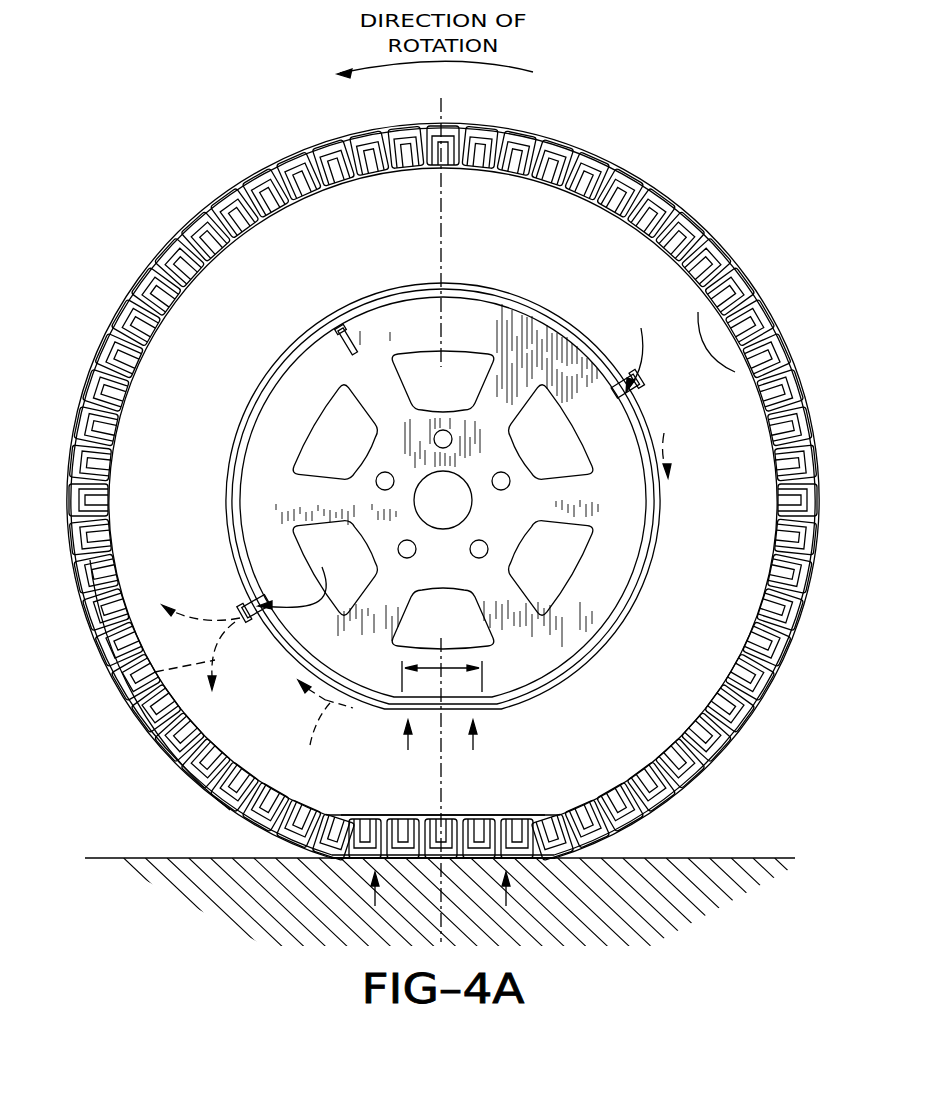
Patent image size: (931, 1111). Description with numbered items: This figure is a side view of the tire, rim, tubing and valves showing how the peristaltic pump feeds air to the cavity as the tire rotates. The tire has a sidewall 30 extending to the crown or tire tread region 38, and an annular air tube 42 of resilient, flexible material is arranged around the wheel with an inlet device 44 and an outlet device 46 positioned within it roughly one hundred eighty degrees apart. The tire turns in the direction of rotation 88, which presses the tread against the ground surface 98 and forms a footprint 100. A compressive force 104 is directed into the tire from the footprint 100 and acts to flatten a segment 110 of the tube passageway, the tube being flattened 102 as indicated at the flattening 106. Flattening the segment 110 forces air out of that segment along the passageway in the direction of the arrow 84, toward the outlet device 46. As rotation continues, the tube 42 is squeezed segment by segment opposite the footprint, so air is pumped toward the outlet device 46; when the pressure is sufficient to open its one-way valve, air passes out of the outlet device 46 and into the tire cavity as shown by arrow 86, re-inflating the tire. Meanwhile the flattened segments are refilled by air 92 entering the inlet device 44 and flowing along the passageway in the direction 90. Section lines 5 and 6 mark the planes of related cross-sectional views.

The sidewall 30 is at (541, 210).
The crown or tire tread region 38 is at (622, 152).
The annular air tube 42 is at (483, 292).
The inlet device 44 is at (640, 402).
The outlet device 46 is at (254, 622).
The arrow 84 is at (325, 726).
The arrow 86 is at (115, 697).
The direction of rotation 88 is at (519, 69).
The direction 90 is at (664, 433).
The air 92 is at (652, 378).
The ground surface 98 is at (695, 857).
The footprint 100 is at (462, 862).
The flattened 102 is at (452, 716).
The compressive force 104 is at (373, 896).
The flattening 106 is at (406, 748).
The segment 110 is at (454, 666).
The section line 5- 5 is at (441, 98).
The section line 6- 6 is at (441, 638).